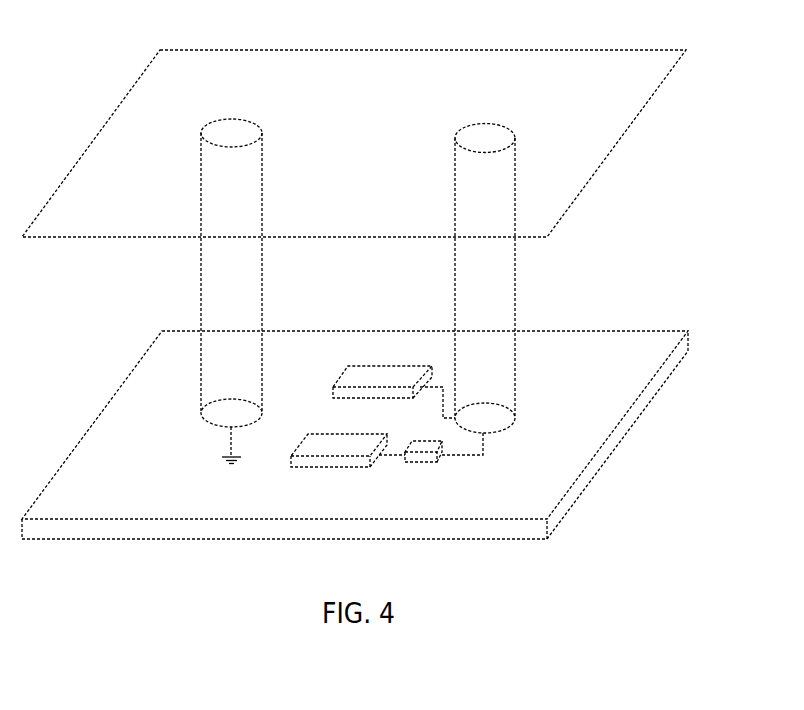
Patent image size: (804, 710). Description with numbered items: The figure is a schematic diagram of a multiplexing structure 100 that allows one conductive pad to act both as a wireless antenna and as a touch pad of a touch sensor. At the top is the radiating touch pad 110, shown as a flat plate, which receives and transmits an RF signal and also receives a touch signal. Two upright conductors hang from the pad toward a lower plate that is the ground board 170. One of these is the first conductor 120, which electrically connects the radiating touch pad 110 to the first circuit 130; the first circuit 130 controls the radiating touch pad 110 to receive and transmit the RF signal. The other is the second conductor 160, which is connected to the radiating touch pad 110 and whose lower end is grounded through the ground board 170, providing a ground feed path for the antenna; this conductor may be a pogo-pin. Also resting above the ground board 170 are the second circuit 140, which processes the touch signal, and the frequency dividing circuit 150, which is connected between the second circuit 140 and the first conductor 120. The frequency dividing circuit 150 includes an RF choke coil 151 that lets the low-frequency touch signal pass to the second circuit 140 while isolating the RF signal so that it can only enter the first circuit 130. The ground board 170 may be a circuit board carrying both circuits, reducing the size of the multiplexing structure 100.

The multiplexing structure 100 is at (418, 31).
The radiating touch pad 110 is at (550, 145).
The first conductor 120 is at (487, 250).
The first circuit 130 is at (385, 375).
The second circuit 140 is at (327, 452).
The frequency dividing circuit 150 is at (567, 520).
The RF choke coil 151 is at (413, 460).
The second conductor 160 is at (233, 293).
The ground board 170 is at (542, 377).